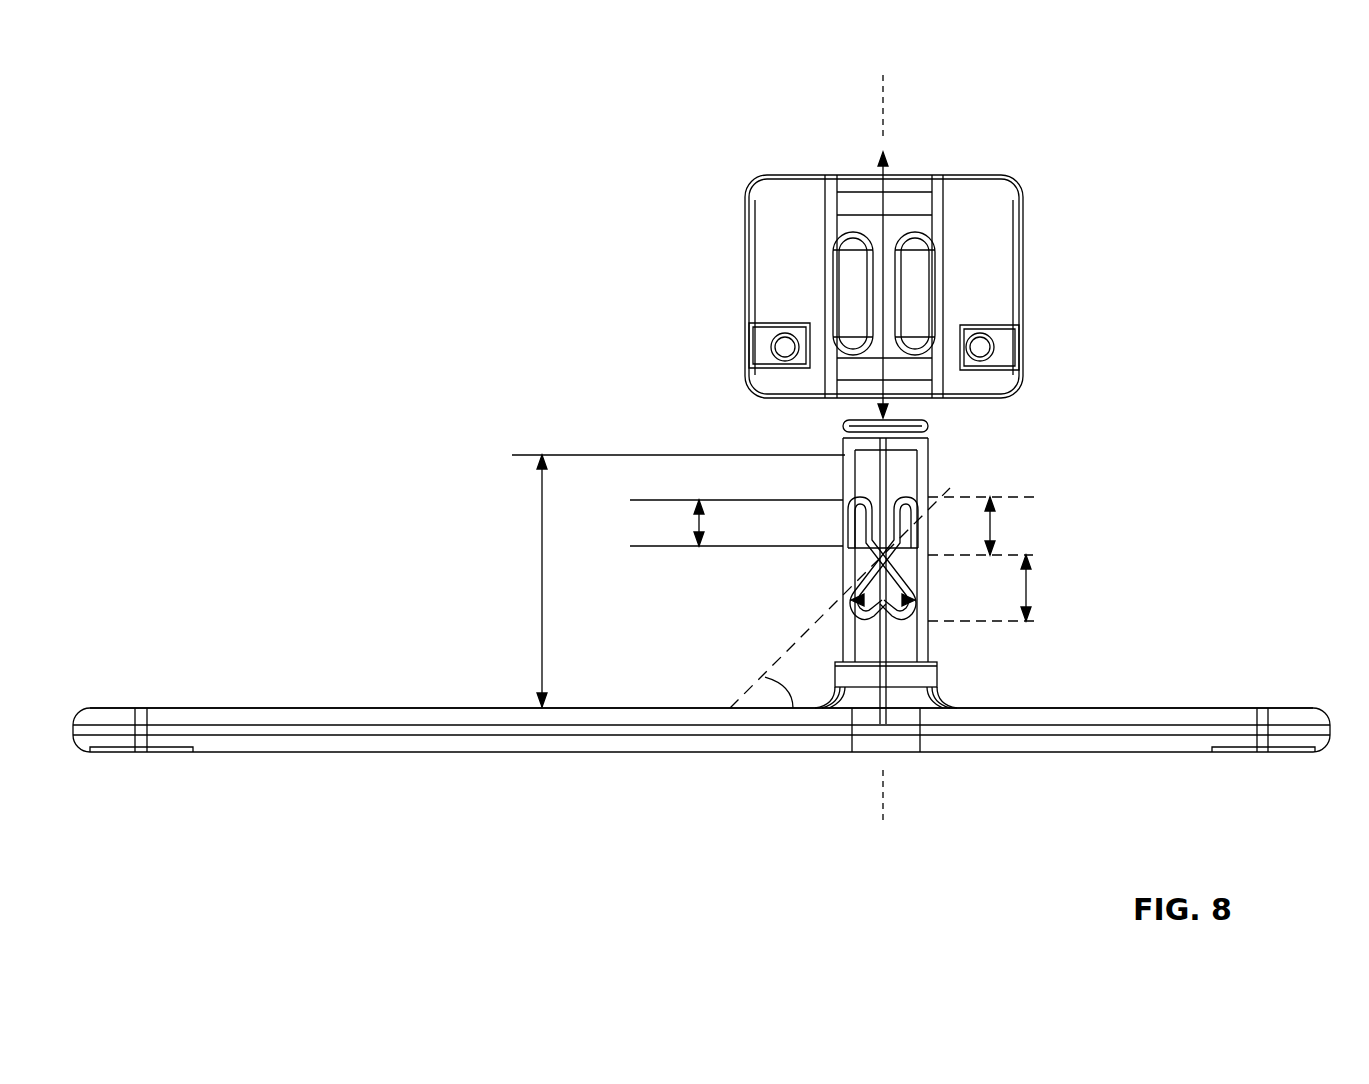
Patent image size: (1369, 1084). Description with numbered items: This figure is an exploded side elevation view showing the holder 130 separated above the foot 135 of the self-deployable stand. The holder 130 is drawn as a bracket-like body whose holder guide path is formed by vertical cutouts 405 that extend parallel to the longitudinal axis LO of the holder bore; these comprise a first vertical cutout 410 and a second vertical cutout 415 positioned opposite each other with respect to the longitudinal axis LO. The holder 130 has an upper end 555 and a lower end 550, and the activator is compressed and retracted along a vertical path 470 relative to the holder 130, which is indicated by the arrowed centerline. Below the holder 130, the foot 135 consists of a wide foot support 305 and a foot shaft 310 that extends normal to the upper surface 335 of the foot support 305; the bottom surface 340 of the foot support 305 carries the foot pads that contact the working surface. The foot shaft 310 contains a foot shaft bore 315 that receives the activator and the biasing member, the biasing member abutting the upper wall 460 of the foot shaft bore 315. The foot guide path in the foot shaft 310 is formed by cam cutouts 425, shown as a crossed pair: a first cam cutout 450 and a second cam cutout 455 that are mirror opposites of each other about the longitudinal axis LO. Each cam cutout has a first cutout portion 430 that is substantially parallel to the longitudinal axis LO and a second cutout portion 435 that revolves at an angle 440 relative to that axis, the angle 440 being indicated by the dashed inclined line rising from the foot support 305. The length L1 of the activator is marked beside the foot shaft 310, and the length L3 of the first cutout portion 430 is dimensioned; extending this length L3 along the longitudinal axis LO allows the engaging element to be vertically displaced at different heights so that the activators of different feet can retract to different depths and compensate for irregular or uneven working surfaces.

The holder 130 is at (998, 298).
The foot 135 is at (478, 728).
The foot support 305 is at (280, 708).
The foot shaft 310 is at (928, 652).
The foot shaft bore 315 is at (855, 468).
The upper surface 335 is at (1062, 708).
The bottom surface 340 is at (1003, 752).
The vertical cutouts 405 is at (830, 228).
The first vertical cutout 410 is at (848, 300).
The second vertical cutout 415 is at (918, 300).
The cam cutouts 425 is at (835, 565).
The first cutout portion 430 is at (990, 527).
The second cutout portion 435 is at (1026, 590).
The angle 440 is at (783, 690).
The first cam cutout 450 is at (845, 607).
The second cam cutout 455 is at (928, 617).
The upper wall 460 is at (905, 470).
The vertical path 470 is at (900, 173).
The lower end 550 is at (1015, 395).
The upper end 555 is at (977, 172).
The longitudinal axis LO is at (883, 122).
The length of the activator L1 is at (542, 525).
The length of the first cutout portion L3 is at (699, 530).